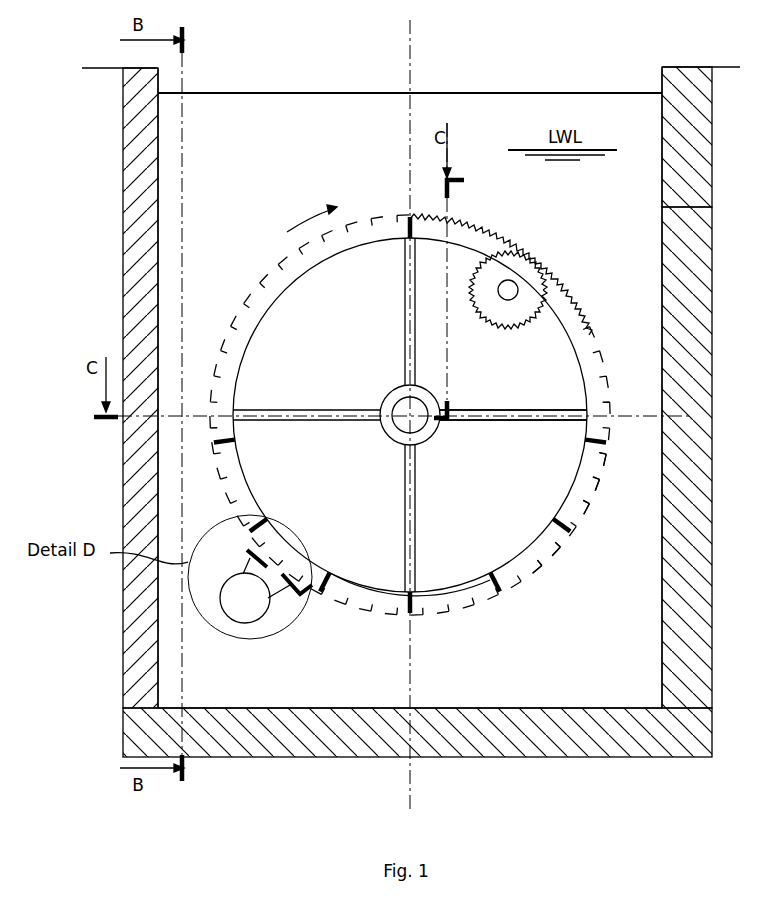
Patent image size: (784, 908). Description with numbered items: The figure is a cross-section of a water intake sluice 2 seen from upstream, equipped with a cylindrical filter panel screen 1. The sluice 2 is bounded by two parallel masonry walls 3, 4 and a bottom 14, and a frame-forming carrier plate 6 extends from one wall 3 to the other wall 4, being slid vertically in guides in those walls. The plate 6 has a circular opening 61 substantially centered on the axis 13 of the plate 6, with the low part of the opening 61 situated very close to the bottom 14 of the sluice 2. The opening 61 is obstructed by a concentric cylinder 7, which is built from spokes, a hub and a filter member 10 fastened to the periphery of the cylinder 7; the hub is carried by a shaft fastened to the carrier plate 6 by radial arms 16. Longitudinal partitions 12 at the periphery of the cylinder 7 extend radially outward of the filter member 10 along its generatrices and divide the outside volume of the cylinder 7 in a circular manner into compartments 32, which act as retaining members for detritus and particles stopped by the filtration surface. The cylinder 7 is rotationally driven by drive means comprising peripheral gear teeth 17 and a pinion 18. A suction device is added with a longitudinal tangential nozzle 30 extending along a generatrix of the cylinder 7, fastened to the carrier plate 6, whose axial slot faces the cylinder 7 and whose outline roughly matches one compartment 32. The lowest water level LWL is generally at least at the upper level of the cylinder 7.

The cylindrical filter panel screen 1 is at (256, 217).
The sluice 2 is at (647, 212).
The masonry wall 3 is at (155, 262).
The masonry wall 4 is at (667, 270).
The carrier plate 6 is at (647, 135).
The cylinder 7 is at (577, 562).
The filter member 10 is at (593, 494).
The longitudinal partitions 12 is at (515, 592).
The axis 13 is at (418, 424).
The bottom 14 is at (497, 707).
The radial arms 16 is at (495, 410).
The peripheral gear teeth 17 is at (488, 233).
The pinion 18 is at (510, 322).
The longitudinal tangential nozzle 30 is at (245, 623).
The compartments 32 is at (248, 296).
The circular opening 61 is at (387, 575).